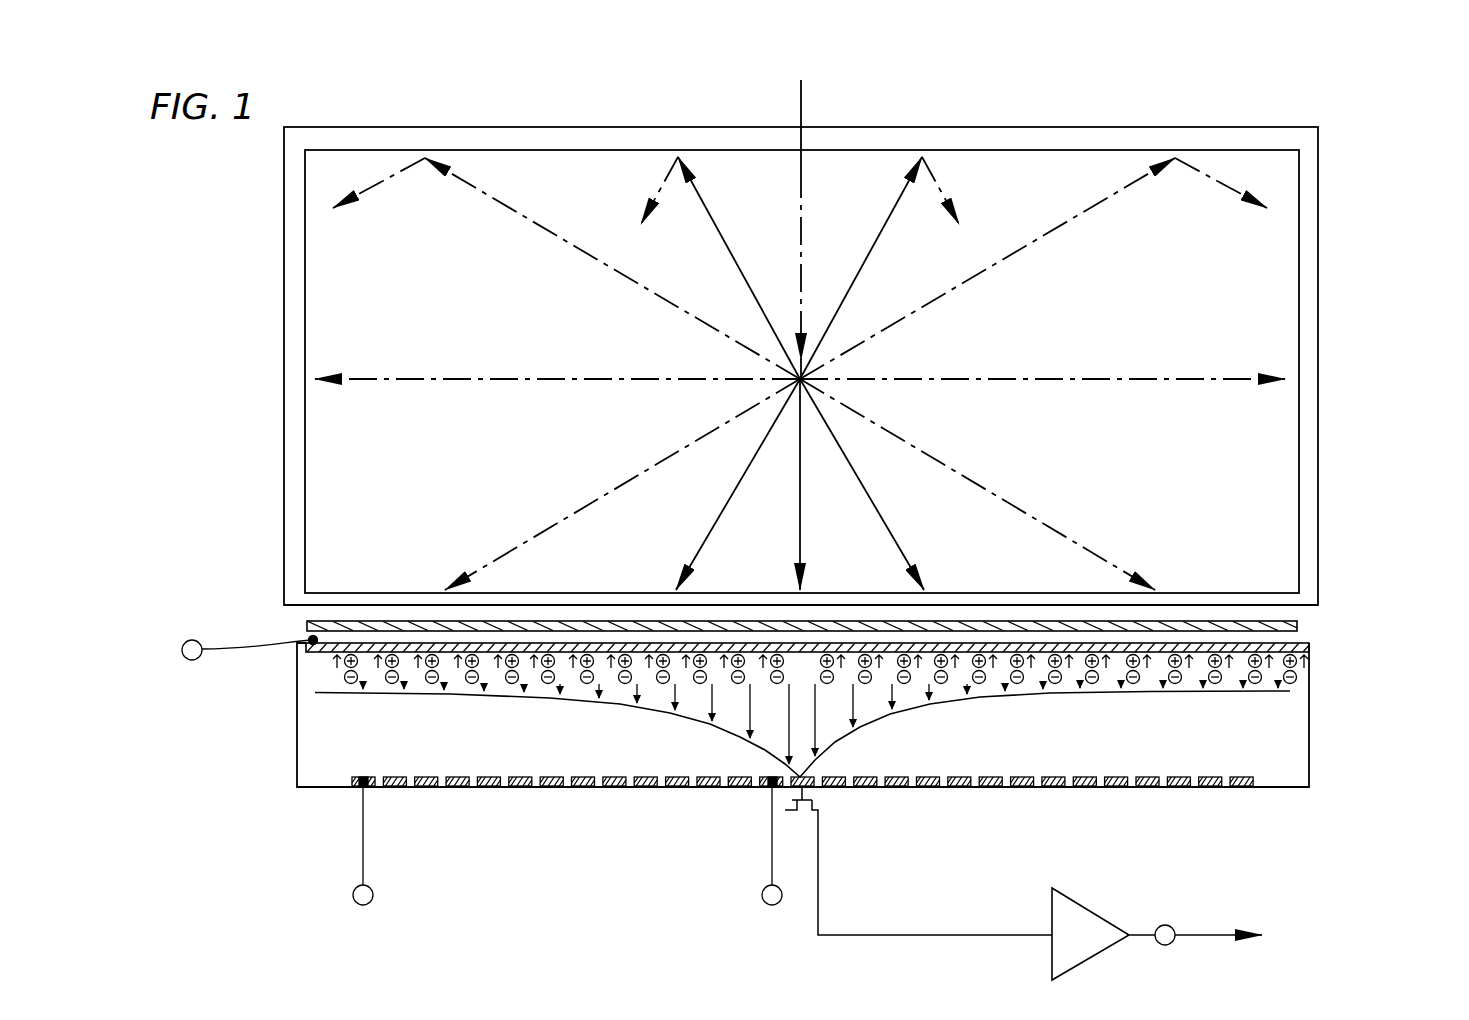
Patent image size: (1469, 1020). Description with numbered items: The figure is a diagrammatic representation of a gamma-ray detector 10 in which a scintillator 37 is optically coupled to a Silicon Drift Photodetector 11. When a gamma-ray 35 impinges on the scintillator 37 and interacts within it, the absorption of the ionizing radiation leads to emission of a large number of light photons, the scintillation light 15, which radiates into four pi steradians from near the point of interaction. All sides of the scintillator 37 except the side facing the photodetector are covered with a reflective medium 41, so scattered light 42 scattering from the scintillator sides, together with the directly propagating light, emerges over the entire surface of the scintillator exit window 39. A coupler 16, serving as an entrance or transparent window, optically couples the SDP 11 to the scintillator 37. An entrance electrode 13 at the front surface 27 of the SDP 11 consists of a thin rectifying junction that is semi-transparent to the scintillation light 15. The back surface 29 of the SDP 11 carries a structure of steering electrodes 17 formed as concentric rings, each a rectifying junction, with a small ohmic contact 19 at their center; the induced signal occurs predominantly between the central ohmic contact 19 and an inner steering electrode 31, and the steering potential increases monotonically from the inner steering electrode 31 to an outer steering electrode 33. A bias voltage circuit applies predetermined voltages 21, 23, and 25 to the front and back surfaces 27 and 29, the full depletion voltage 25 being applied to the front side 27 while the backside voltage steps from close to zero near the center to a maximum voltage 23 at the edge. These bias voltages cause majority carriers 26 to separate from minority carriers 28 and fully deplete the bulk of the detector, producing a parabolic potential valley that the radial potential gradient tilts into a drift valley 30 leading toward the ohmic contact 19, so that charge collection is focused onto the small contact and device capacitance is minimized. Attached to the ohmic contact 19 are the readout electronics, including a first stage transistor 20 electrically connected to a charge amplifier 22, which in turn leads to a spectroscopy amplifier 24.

The gamma-ray detector 10 is at (262, 218).
The Silicon Drift Photodetector 11 is at (315, 747).
The entrance electrode 13 is at (1308, 650).
The scintillation light 15 is at (632, 380).
The coupler 16 is at (307, 624).
The steering electrodes 17 is at (920, 765).
The ohmic contact 19 is at (812, 788).
The first stage transistor 20 is at (800, 803).
The predetermined voltage 21 is at (762, 895).
The charge amplifier 22 is at (1085, 922).
The predetermined voltage Vmax 23 is at (352, 895).
The spectroscopy amplifier 24 is at (1245, 932).
The full depletion voltage Vdep 25 is at (185, 657).
The majority carriers 26 is at (317, 680).
The front surface 27 is at (1305, 632).
The minority carriers 28 is at (313, 663).
The back surface 29 is at (1171, 788).
The drift valley 30 is at (870, 739).
The inner steering electrode 31 is at (770, 787).
The outer steering electrode 33 is at (363, 788).
The gamma-ray 35 is at (800, 103).
The scintillator 37 is at (1263, 290).
The scintillator exit window 39 is at (290, 604).
The reflective medium 41 is at (1305, 140).
The scattered light 42 is at (1227, 188).